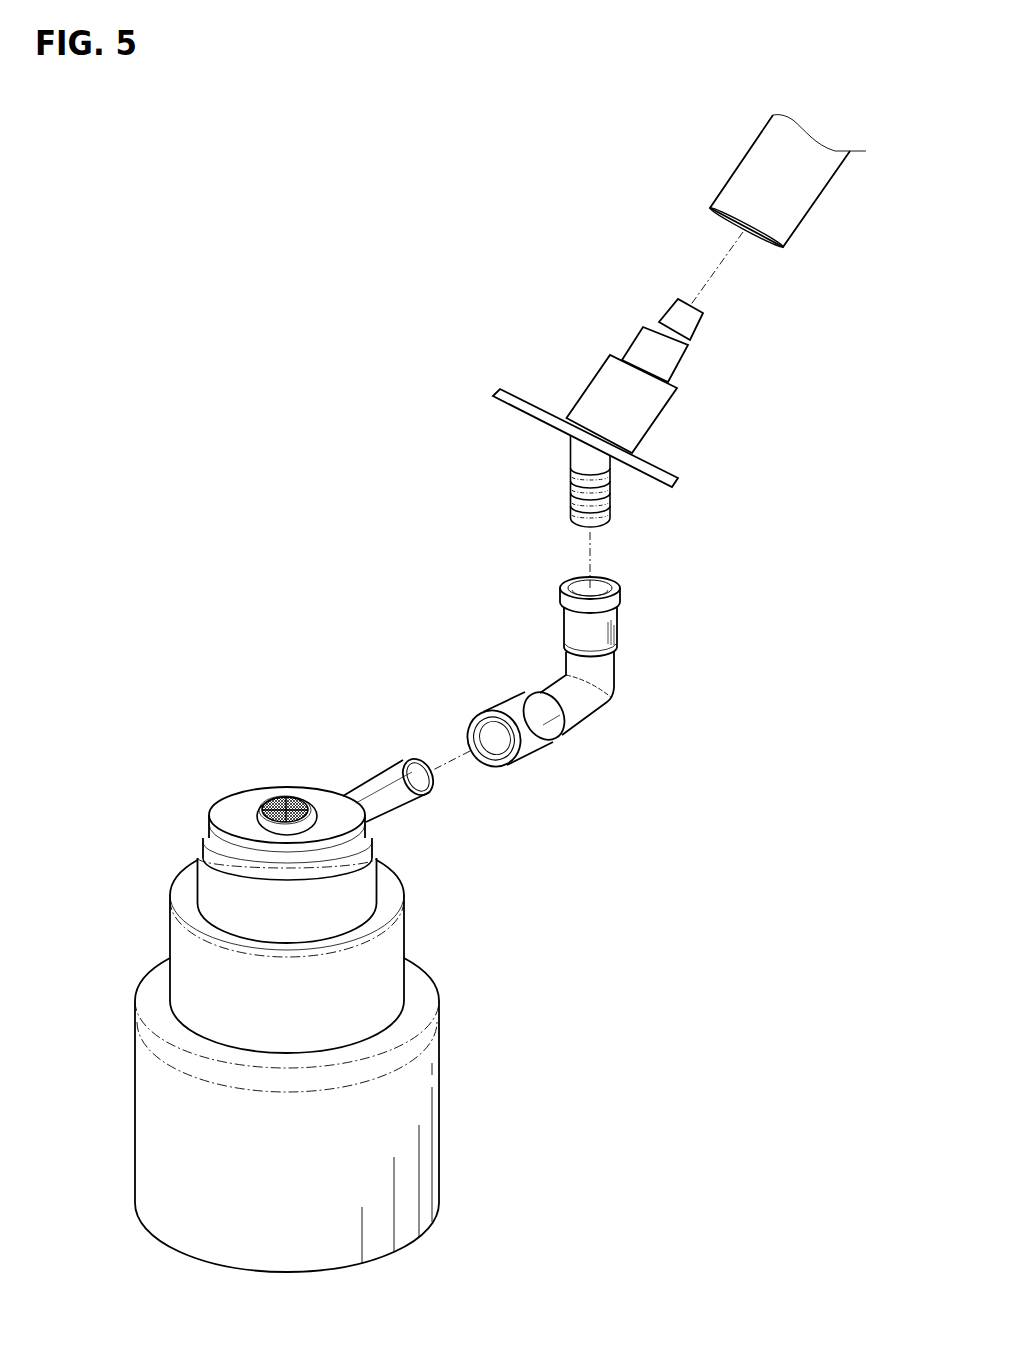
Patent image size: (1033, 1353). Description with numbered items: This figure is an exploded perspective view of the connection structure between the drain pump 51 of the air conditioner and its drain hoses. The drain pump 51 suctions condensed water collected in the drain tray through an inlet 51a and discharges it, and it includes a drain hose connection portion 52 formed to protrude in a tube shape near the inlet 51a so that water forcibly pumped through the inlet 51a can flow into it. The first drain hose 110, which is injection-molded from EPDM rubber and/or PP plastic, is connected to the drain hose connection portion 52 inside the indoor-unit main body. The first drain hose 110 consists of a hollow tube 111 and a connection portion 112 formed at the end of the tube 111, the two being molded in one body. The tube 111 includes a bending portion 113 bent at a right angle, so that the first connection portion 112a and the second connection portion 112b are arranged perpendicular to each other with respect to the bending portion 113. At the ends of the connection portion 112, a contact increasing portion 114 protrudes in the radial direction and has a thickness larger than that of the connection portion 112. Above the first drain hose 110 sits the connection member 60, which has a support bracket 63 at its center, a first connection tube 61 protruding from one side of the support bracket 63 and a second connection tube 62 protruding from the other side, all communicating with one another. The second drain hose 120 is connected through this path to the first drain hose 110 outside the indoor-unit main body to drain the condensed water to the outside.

The drain pump 51 is at (210, 892).
The inlet 51a is at (284, 803).
The drain hose connection portion 52 is at (378, 786).
The connection member 60 is at (484, 359).
The first connection tube 61 is at (580, 492).
The second connection tube 62 is at (607, 383).
The support bracket 63 is at (532, 415).
The first drain hose 110 is at (660, 637).
The tube 111 is at (594, 713).
The connection portion 112 is at (494, 613).
The first connection portion 112a is at (512, 708).
The second connection portion 112b is at (573, 620).
The bending portion 113 is at (614, 700).
The contact increasing portion 114 is at (523, 738).
The second drain hose 120 is at (745, 192).